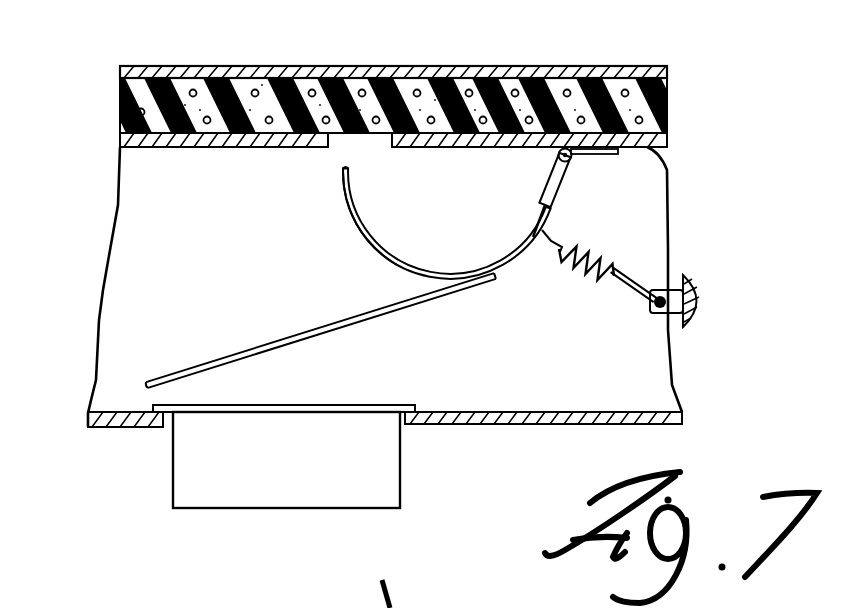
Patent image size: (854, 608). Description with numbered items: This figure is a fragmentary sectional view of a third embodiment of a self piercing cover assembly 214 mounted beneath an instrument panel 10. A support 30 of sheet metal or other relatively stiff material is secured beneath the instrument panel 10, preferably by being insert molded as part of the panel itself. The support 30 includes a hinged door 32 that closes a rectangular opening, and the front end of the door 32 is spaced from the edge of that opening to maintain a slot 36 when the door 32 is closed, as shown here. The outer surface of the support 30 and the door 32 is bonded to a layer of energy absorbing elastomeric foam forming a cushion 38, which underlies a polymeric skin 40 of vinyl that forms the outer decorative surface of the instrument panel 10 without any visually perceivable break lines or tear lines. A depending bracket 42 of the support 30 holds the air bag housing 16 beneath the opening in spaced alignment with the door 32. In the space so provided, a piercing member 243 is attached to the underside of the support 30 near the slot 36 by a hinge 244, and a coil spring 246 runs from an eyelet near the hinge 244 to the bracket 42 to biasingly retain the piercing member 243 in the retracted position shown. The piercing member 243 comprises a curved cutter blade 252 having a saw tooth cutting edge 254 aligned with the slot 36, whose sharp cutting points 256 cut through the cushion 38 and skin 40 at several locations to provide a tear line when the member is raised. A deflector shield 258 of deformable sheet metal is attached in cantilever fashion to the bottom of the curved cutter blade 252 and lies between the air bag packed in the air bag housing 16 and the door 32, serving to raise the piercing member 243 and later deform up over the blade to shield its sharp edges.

The instrument panel 10 is at (195, 66).
The air bag housing 16 is at (390, 470).
The support 30 is at (667, 165).
The door 32 is at (196, 149).
The slot 36 is at (362, 148).
The cushion 38 is at (507, 70).
The skin 40 is at (355, 67).
The bracket 42 is at (126, 418).
The self piercing cover assembly 214 is at (95, 264).
The piercing member 243 is at (562, 211).
The hinge 244 is at (560, 165).
The coil spring 246 is at (578, 272).
The curved cutter blade 252 is at (405, 264).
The saw tooth cutting edge 254 is at (340, 176).
The sharp cutting points 256 is at (345, 167).
The deflector shield 258 is at (347, 323).